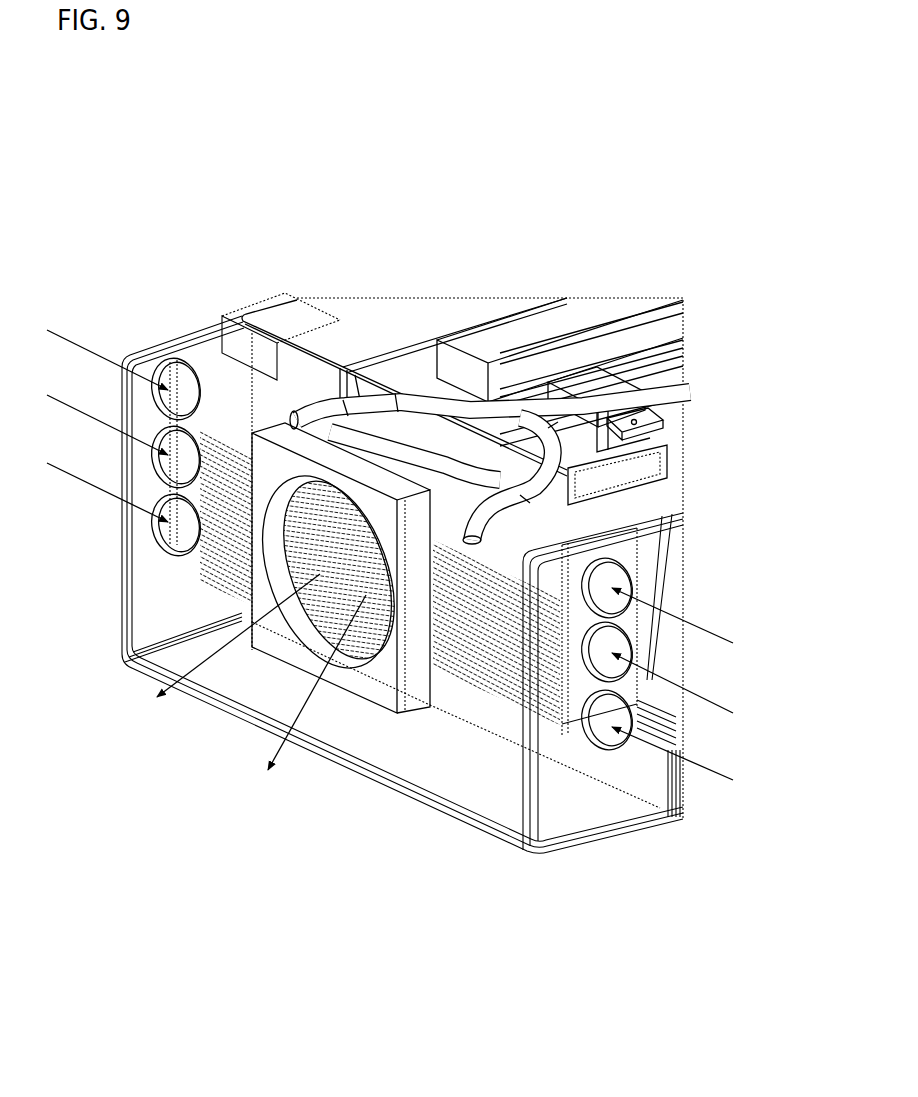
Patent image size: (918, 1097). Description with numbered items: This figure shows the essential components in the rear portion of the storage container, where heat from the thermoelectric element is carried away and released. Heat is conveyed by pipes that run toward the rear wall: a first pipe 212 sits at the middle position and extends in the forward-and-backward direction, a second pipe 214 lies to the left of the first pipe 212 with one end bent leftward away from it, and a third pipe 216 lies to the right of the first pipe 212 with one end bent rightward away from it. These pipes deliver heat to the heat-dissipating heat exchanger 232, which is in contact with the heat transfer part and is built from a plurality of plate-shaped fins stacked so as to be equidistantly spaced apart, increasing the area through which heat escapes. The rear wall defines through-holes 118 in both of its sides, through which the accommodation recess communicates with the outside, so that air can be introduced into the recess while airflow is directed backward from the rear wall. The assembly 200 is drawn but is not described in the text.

The through-holes 118 is at (614, 594).
The heat exchange module 200 is at (385, 675).
The first pipe 212 is at (682, 360).
The second pipe 214 is at (673, 373).
The third pipe 216 is at (637, 362).
The heat-dissipating heat exchanger 232 is at (497, 668).